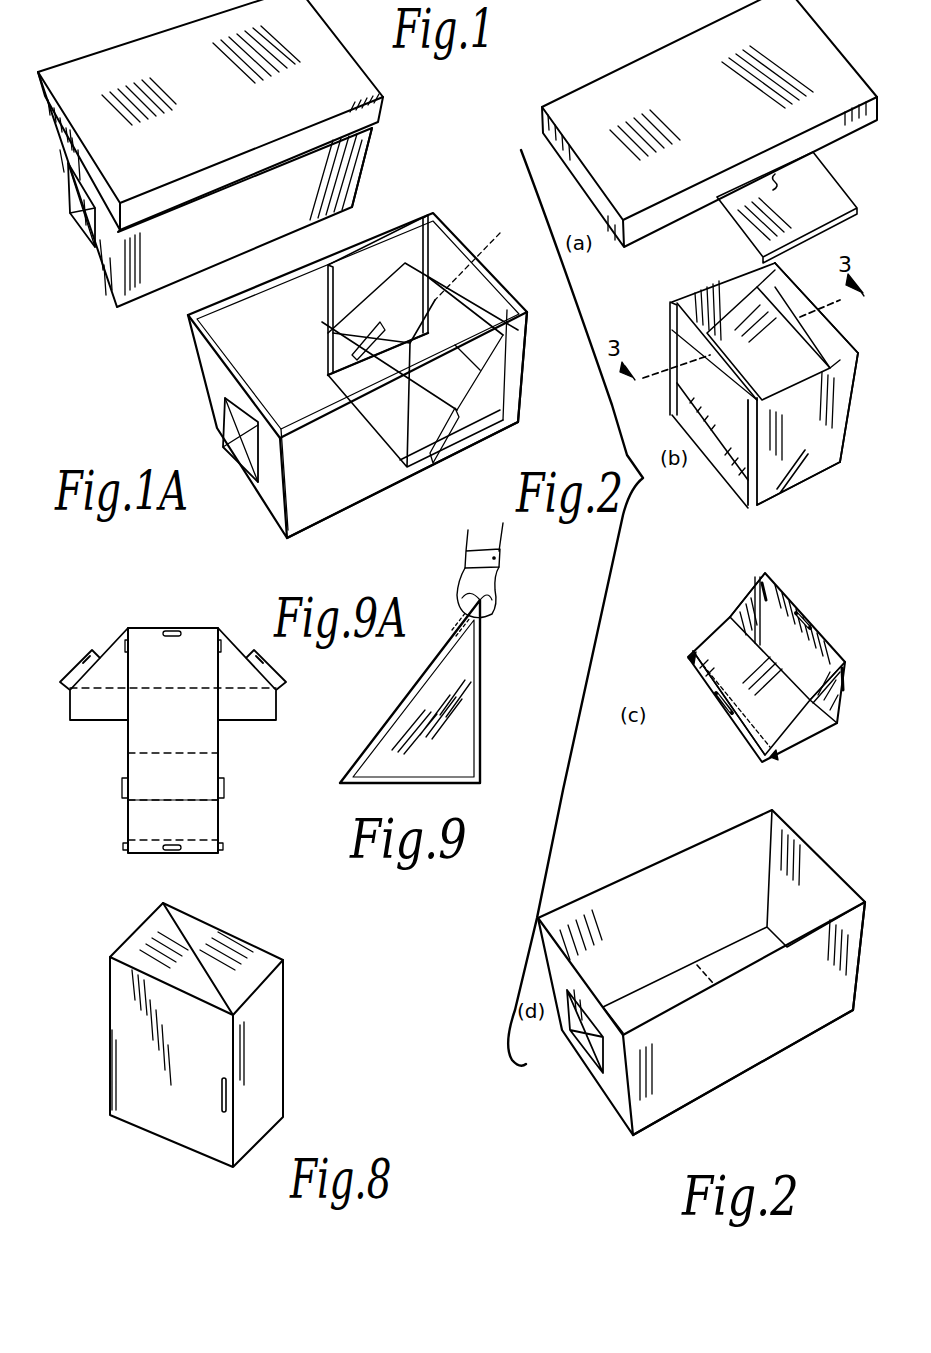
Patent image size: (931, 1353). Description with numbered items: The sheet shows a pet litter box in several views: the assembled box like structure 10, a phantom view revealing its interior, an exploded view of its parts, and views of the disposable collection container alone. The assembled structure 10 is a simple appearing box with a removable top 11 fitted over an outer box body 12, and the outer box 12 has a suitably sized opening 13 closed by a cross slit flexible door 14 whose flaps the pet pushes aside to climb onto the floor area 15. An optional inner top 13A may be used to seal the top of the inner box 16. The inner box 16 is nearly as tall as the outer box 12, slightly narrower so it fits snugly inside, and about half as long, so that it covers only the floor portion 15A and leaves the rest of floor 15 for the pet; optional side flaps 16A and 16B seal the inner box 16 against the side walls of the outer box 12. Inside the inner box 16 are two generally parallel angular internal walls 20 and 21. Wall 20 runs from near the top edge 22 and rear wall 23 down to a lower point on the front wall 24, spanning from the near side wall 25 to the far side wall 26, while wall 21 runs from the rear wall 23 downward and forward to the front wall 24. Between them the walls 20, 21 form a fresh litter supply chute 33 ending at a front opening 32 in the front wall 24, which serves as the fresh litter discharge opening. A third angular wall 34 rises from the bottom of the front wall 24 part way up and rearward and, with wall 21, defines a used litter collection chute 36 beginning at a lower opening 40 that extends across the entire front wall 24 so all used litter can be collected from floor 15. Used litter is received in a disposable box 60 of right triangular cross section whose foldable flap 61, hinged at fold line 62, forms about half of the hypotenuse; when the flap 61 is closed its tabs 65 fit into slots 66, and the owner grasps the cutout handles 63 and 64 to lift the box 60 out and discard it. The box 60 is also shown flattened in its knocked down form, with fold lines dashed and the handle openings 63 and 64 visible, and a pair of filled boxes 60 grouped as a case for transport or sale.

In FIG. 1, the box like structure 10 is at (362, 186).
In FIG. 1, the removable top 11 is at (322, 42).
In FIG. 2, the removable top 11 is at (680, 57).
In FIG. 1, the outer box body 12 is at (173, 263).
In FIG. 1A, the outer box body 12 is at (280, 492).
In FIG. 2, the outer box body 12 is at (640, 1082).
In FIG. 1, the opening 13 is at (86, 233).
In FIG. 1A, the opening 13 is at (223, 405).
In FIG. 2, the inner top 13A is at (835, 200).
In FIG. 1, the cross slit flexible door 14 is at (76, 210).
In FIG. 1A, the cross slit flexible door 14 is at (228, 446).
In FIG. 1A, the floor area 15 is at (305, 478).
In FIG. 2, the floor area 15 is at (655, 1008).
In FIG. 1A, the floor portion covered by inner box 15A is at (447, 452).
In FIG. 2, the floor portion covered by inner box 15A is at (725, 965).
In FIG. 1A, the inner box 16 is at (353, 267).
In FIG. 2, the inner box 16 is at (845, 448).
In FIG. 2, the side flap 16A is at (670, 306).
In FIG. 2, the side flap 16B is at (762, 492).
In FIG. 1A, the angular internal wall 20 is at (462, 240).
In FIG. 2, the angular internal wall 20 is at (760, 308).
In FIG. 1A, the angular internal wall 21 is at (487, 265).
In FIG. 2, the angular internal wall 21 is at (818, 328).
In FIG. 2, the top edge 22 is at (733, 282).
In FIG. 2, the rear wall 23 is at (852, 345).
In FIG. 2, the front wall 24 is at (675, 350).
In FIG. 2, the near side wall 25 is at (843, 405).
In FIG. 2, the far side wall 26 is at (692, 300).
In FIG. 1A, the front opening 32 is at (350, 330).
In FIG. 1A, the fresh litter supply chute 33 is at (500, 350).
In FIG. 1A, the angular wall 34 is at (470, 436).
In FIG. 2, the used litter collection chute 36 is at (680, 420).
In FIG. 2, the lower opening 40 is at (728, 462).
In FIG. 2, the disposable box 60 is at (850, 700).
In FIG. 9A, the disposable box 60 is at (215, 742).
In FIG. 9, the disposable box 60 is at (526, 737).
In FIG. 10, the disposable box 60 is at (146, 915).
In FIG. 2, the foldable flap 61 is at (718, 645).
In FIG. 9A, the foldable flap 61 is at (202, 826).
In FIG. 2, the fold line 62 is at (810, 701).
In FIG. 2, the cutout handle 63 is at (808, 618).
In FIG. 9A, the cutout handle 63 is at (173, 630).
In FIG. 2, the cutout handle 64 is at (727, 712).
In FIG. 9A, the cutout handle 64 is at (172, 852).
In FIG. 10, the cutout handle 64 is at (168, 858).
In FIG. 2, the tab 65 is at (688, 658).
In FIG. 2, the slot 66 is at (760, 582).
In FIG. 9A, the slot 66 is at (128, 640).